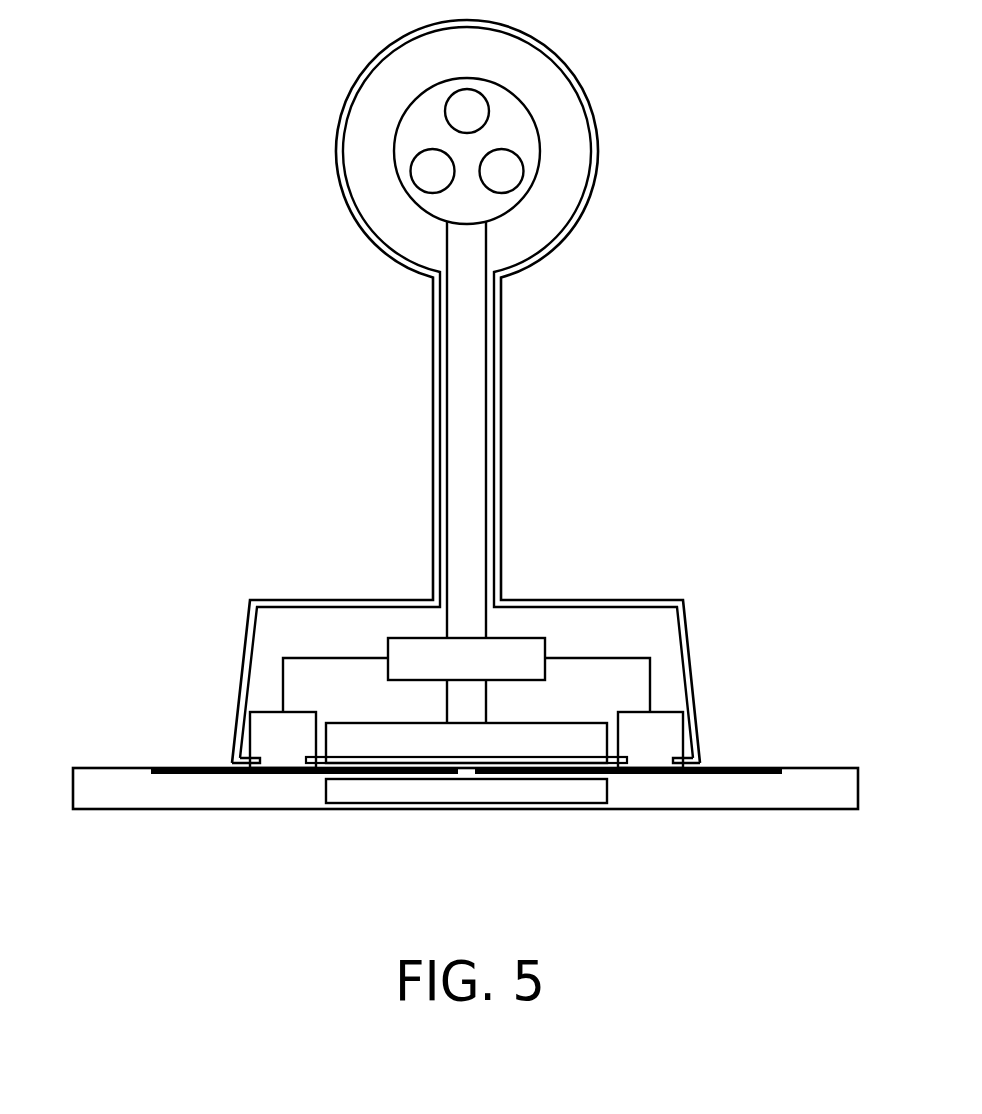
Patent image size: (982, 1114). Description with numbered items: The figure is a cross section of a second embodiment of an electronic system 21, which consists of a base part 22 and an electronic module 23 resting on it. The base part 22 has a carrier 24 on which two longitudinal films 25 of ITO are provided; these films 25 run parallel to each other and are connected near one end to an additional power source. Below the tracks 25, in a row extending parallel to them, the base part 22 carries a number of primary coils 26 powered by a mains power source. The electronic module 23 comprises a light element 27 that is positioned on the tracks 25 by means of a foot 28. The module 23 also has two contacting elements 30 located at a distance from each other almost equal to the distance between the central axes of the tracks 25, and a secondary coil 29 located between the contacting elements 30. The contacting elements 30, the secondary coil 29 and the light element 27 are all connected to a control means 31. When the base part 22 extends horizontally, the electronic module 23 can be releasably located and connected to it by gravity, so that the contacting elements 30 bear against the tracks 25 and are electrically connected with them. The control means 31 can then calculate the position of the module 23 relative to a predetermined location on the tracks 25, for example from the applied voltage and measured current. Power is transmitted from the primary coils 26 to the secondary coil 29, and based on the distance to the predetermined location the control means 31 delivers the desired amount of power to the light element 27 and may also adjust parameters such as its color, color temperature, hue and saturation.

The electronic system 21 is at (740, 302).
The base part 22 is at (83, 745).
The electronic module 23 is at (314, 246).
The carrier 24 is at (132, 788).
The films of ITO (tracks) 25 is at (187, 768).
The primary coils 26 is at (547, 792).
The light element 27 is at (513, 173).
The foot 28 is at (608, 605).
The secondary coil 29 is at (487, 747).
The contacting elements 30 is at (268, 728).
The control means 31 is at (521, 650).